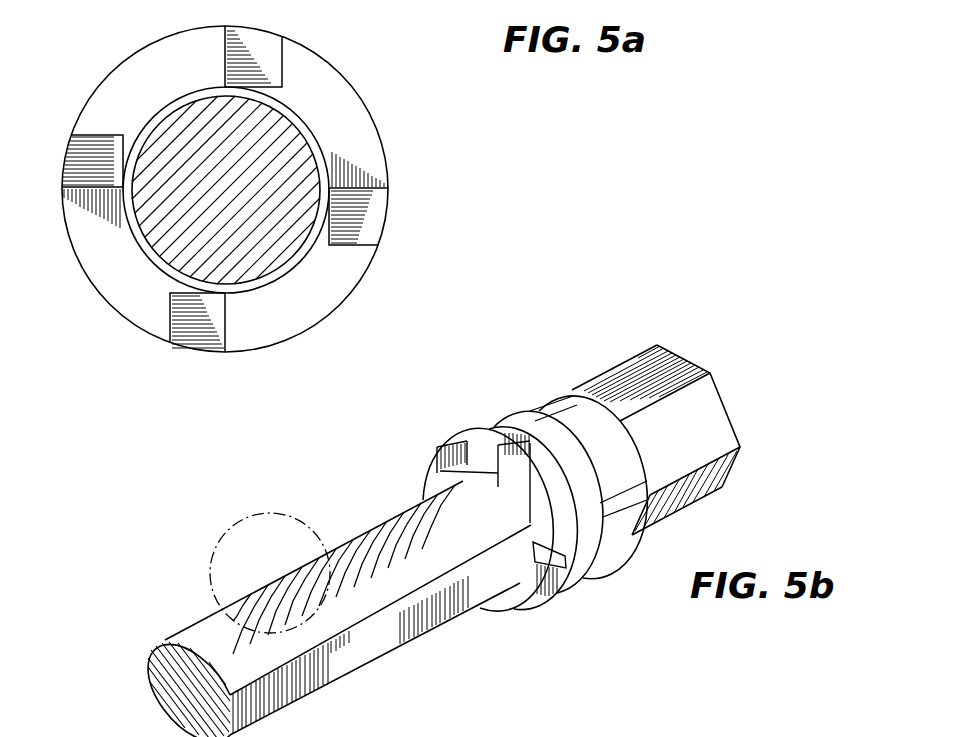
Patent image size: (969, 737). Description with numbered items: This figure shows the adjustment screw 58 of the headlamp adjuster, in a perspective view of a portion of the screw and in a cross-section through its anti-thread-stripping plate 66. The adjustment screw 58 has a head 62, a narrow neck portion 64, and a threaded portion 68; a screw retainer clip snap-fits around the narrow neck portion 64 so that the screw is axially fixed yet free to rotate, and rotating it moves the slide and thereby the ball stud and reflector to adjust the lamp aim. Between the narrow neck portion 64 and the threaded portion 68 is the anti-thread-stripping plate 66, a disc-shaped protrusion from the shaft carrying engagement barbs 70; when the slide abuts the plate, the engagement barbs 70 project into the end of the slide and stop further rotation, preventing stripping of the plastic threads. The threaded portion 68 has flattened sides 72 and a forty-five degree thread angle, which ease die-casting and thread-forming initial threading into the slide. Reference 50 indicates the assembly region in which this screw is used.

In FIG. 5B, the fastener assembly 50 is at (216, 527).
In FIG. 5A, the adjustment screw 58 is at (180, 128).
In FIG. 5B, the head 62 is at (650, 390).
In FIG. 5B, the narrow neck portion 64 is at (522, 432).
In FIG. 5A, the anti-thread-stripping plate 66 is at (368, 105).
In FIG. 5B, the anti-thread-stripping plate 66 is at (480, 430).
In FIG. 5B, the threaded portion 68 is at (385, 527).
In FIG. 5A, the engagement barbs 70 is at (268, 52).
In FIG. 5B, the engagement barbs 70 is at (455, 455).
In FIG. 5A, the flattened sides 72 is at (326, 174).
In FIG. 5B, the flattened sides 72 is at (370, 640).